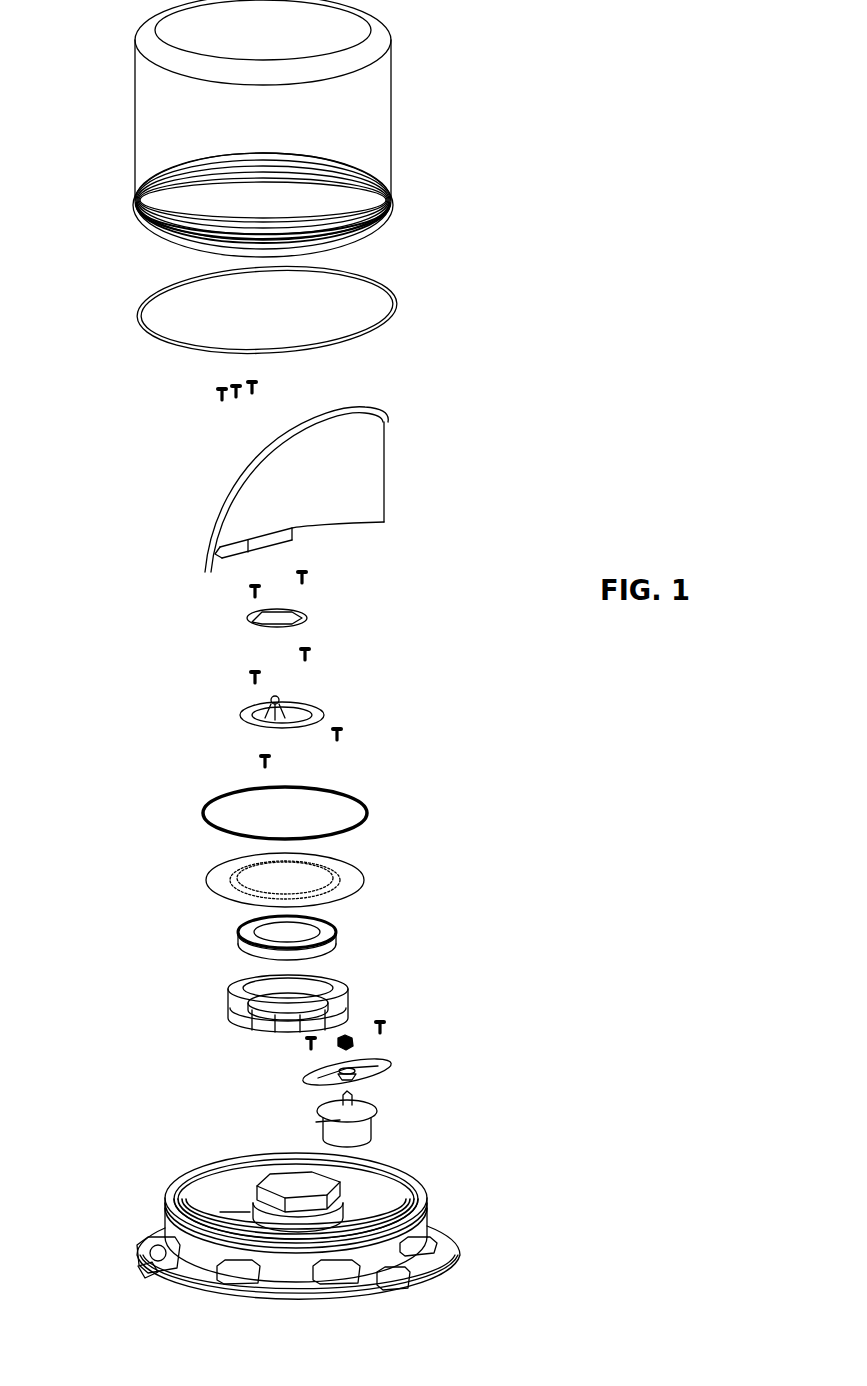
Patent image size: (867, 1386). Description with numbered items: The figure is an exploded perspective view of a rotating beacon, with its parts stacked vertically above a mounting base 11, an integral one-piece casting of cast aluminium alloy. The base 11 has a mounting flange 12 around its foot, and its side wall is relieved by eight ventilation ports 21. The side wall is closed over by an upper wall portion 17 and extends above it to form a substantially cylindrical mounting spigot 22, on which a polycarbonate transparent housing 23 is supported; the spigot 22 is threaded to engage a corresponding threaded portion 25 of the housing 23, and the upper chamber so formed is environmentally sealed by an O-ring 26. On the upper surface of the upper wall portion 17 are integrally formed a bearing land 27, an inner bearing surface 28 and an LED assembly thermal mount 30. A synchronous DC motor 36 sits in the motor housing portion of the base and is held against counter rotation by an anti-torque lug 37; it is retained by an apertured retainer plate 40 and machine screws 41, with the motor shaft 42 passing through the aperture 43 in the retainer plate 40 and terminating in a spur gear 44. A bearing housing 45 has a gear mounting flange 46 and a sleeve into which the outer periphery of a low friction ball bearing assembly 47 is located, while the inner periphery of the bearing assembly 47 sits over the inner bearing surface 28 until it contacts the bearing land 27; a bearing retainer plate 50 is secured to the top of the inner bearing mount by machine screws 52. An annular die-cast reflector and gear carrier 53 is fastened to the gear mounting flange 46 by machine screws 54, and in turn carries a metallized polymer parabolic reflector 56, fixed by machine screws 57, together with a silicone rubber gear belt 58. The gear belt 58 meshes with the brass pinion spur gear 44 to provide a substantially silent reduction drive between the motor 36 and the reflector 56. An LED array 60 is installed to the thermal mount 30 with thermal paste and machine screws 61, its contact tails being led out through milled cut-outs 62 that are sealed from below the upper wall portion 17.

The mounting base 11 is at (440, 1200).
The mounting flange 12 is at (440, 1250).
The upper wall portion 17 is at (197, 1207).
The ventilation ports 21 is at (438, 1243).
The mounting spigot 22 is at (410, 1192).
The transparent housing 23 is at (368, 120).
The threaded portion 25 is at (395, 210).
The O-ring 26 is at (397, 300).
The bearing land 27 is at (343, 1220).
The inner bearing surface 28 is at (257, 1223).
The LED assembly thermal mount 30 is at (290, 1178).
The synchronous DC motor 36 is at (380, 1130).
The anti-torque lug 37 is at (330, 1122).
The retainer plate 40 is at (390, 1068).
The machine screws 41 is at (378, 1030).
The motor shaft 42 is at (375, 1097).
The aperture 43 is at (355, 1057).
The spur gear 44 is at (348, 1034).
The bearing housing 45 is at (243, 1019).
The gear mounting flange 46 is at (340, 977).
The ball bearing assembly 47 is at (336, 932).
The bearing retainer plate 50 is at (325, 710).
The machine screws 52 is at (308, 652).
The reflector and gear carrier 53 is at (356, 872).
The machine screws 54 is at (340, 733).
The parabolic reflector 56 is at (363, 443).
The machine screws 57 is at (262, 393).
The gear belt 58 is at (365, 803).
The LED array 60 is at (307, 613).
The machine screws 61 is at (305, 570).
The milled cut-outs 62 is at (138, 1272).